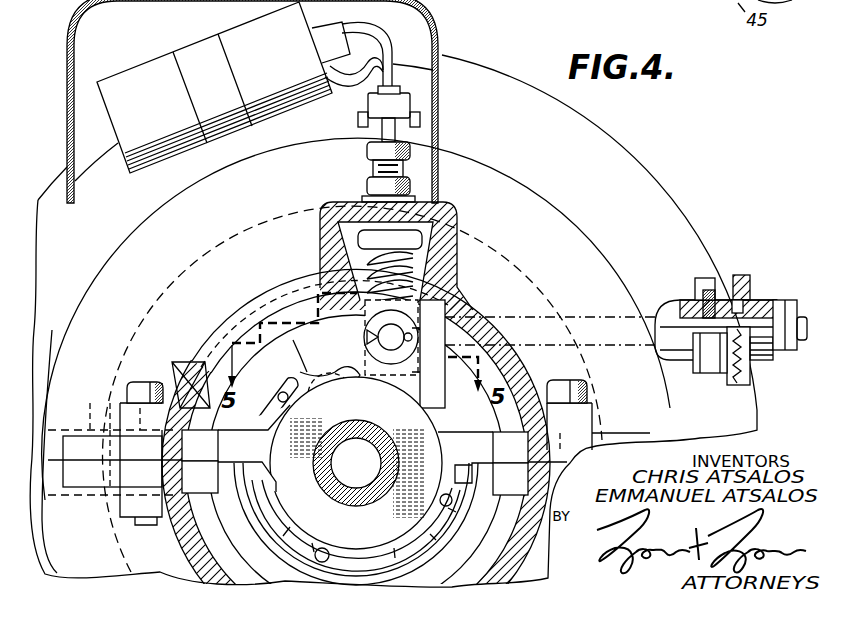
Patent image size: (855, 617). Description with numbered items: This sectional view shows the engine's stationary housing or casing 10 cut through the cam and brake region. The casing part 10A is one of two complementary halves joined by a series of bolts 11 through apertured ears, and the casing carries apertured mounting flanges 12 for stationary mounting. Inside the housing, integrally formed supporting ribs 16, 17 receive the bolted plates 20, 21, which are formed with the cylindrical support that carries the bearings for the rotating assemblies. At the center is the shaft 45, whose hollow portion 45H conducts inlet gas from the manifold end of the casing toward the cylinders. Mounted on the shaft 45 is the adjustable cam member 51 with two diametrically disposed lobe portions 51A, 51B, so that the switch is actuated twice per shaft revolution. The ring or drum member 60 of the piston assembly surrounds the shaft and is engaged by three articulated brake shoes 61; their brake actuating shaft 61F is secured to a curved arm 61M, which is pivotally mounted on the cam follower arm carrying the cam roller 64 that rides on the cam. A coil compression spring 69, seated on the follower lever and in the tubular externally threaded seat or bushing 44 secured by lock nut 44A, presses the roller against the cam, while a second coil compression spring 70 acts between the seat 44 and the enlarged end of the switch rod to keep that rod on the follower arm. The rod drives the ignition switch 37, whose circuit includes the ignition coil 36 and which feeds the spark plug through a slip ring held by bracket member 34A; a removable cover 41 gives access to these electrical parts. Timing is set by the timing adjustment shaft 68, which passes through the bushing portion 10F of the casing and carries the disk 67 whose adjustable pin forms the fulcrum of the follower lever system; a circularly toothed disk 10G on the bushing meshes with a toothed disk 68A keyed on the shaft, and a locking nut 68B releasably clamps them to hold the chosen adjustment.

The stationary housing or casing 10 is at (652, 160).
The casing part 10A is at (462, 216).
The bushing portion of casing 10F is at (687, 303).
The circularly toothed disk 10G is at (717, 280).
The bolts 11 is at (143, 392).
The apertured mounting flanges 12 is at (80, 443).
The supporting rib 16 is at (191, 488).
The supporting rib 17 is at (501, 489).
The plate 20 is at (191, 457).
The plate 21 is at (501, 458).
The bracket member 34A is at (200, 405).
The ignition coil 36 is at (157, 70).
The ignition switch 37 is at (422, 100).
The cover 41 is at (440, 28).
The bushing 44 is at (373, 163).
The lock nut 44A is at (372, 190).
The shaft 45 is at (370, 428).
The hollow portion of shaft 45H is at (367, 488).
The cam member 51 is at (295, 508).
The lobe portion 51A is at (428, 438).
The lobe portion 51B is at (290, 493).
The ring or drum member 60 is at (450, 543).
The brake shoes 61 is at (415, 553).
The brake actuating shaft 61F is at (282, 377).
The curved arm 61M is at (332, 352).
The cam roller 64 is at (418, 332).
The disk 67 is at (442, 292).
The timing adjustment shaft 68 is at (577, 317).
The toothed disk 68A is at (750, 290).
The locking nut 68B is at (787, 308).
The coil compression spring 69 is at (406, 262).
The coil compression spring 70 is at (370, 241).